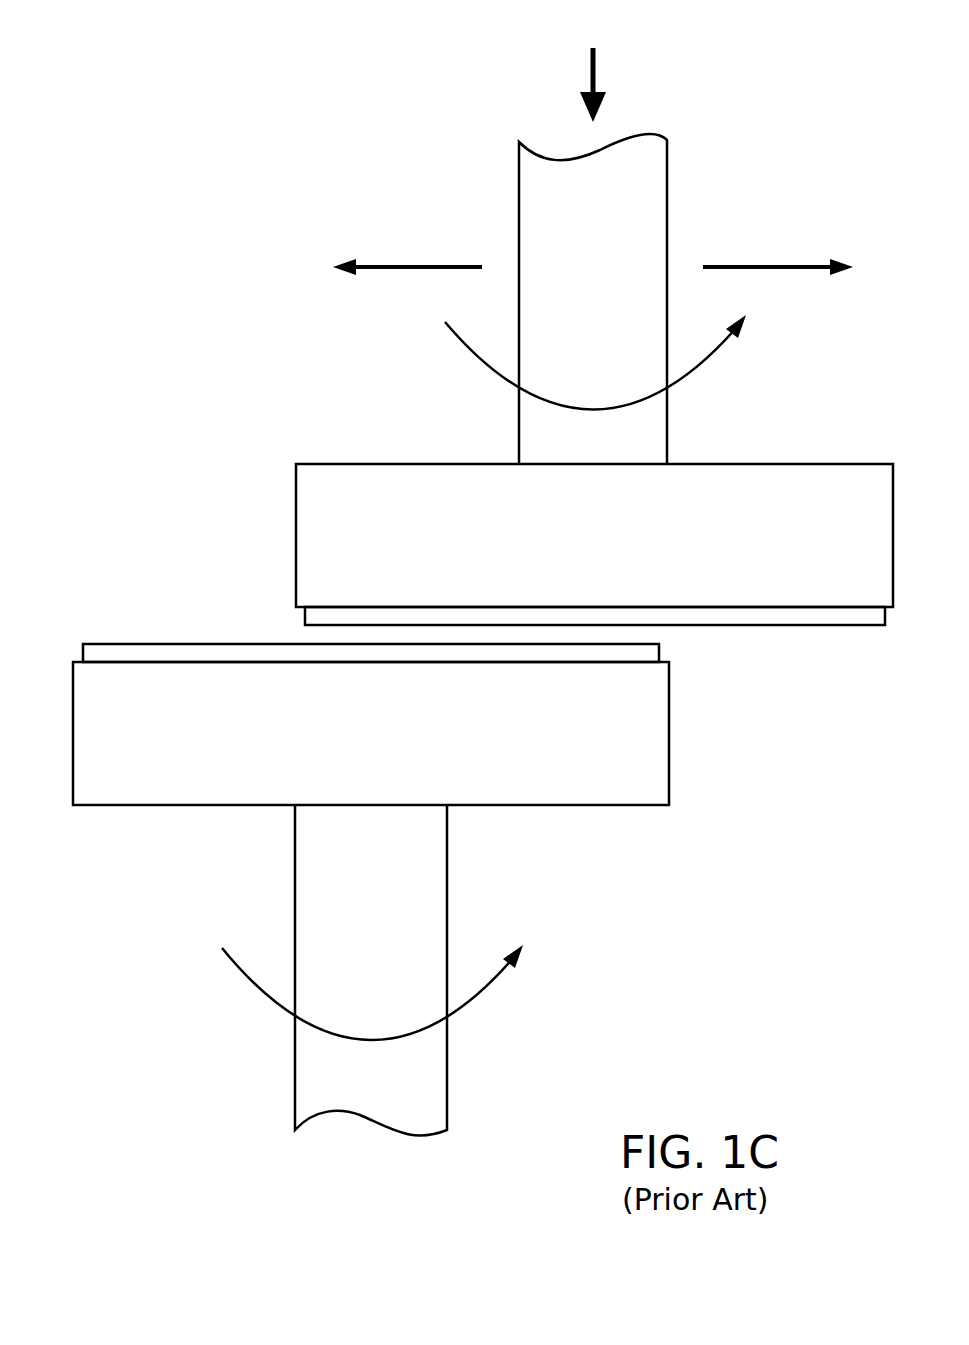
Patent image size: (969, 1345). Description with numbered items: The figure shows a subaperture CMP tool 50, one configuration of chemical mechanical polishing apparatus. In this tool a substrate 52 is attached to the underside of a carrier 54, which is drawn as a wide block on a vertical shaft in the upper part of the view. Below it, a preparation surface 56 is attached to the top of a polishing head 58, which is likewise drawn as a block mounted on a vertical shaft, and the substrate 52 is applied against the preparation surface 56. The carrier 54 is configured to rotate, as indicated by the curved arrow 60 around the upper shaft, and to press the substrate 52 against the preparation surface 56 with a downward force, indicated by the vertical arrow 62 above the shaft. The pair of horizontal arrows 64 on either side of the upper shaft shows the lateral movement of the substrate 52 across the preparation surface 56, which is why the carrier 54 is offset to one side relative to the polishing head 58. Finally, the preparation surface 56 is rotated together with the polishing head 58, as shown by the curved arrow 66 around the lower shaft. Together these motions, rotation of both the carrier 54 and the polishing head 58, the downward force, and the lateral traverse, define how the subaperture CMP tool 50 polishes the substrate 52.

The subaperture CMP tool 50 is at (189, 55).
The substrate 52 is at (305, 615).
The carrier 54 is at (296, 507).
The preparation surface 56 is at (112, 650).
The polishing head 58 is at (93, 804).
The arrow 60 is at (452, 352).
The arrow 62 is at (597, 72).
The arrows 64 is at (428, 266).
The arrow 66 is at (240, 1000).